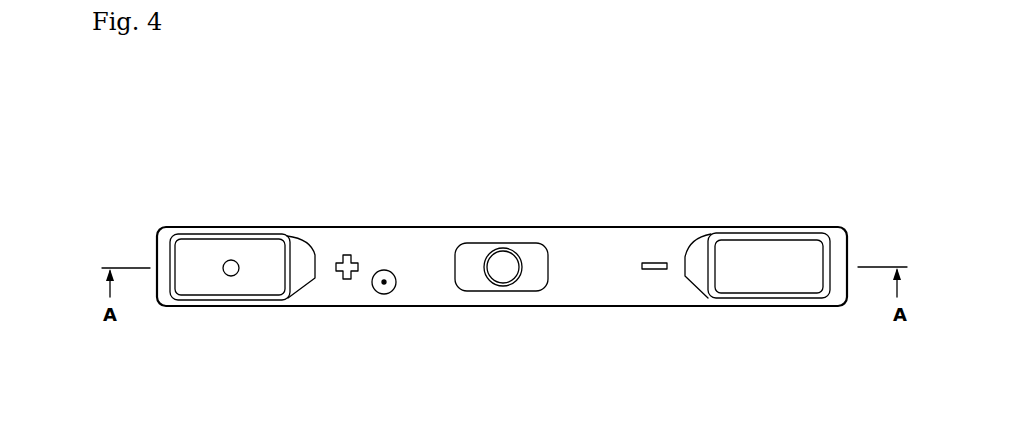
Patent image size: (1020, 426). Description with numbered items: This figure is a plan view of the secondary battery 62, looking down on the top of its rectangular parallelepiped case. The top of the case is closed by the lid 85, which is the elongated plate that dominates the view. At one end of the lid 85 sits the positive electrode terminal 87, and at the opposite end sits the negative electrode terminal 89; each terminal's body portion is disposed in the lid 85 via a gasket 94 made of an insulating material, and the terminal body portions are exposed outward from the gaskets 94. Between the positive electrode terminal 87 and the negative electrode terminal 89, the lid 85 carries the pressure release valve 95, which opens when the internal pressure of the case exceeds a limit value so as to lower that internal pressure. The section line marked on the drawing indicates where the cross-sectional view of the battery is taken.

The secondary battery 62 is at (813, 197).
The lid 85 is at (429, 238).
The positive electrode terminal 87 is at (232, 245).
The gasket 94 is at (303, 260).
The pressure release valve 95 is at (503, 258).
The negative electrode terminal 89 is at (762, 252).